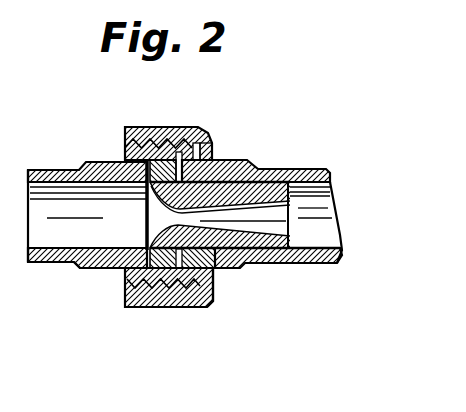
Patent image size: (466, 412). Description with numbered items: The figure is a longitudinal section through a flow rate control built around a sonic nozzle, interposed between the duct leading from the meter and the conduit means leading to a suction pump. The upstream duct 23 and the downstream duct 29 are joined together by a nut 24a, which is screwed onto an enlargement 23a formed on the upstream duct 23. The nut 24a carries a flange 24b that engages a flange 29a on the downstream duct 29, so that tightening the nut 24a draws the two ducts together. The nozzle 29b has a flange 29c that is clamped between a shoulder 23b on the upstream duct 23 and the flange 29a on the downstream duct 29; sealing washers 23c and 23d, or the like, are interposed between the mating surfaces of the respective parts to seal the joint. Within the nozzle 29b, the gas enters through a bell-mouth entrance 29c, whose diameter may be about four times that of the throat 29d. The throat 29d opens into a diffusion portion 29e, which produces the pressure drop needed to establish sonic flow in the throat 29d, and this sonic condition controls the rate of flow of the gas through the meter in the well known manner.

The upstream duct 23 is at (87, 164).
The enlargement 23a is at (143, 143).
The shoulder 23b is at (128, 262).
The sealing washer 23c is at (128, 290).
The sealing washer 23d is at (170, 306).
The nut 24a is at (188, 137).
The flange 24b is at (217, 153).
The downstream duct 29 is at (312, 170).
The flange 29a is at (195, 305).
The nozzle 29b is at (246, 265).
The flange 29c is at (153, 217).
The throat 29d is at (233, 210).
The diffusion portion 29e is at (290, 229).